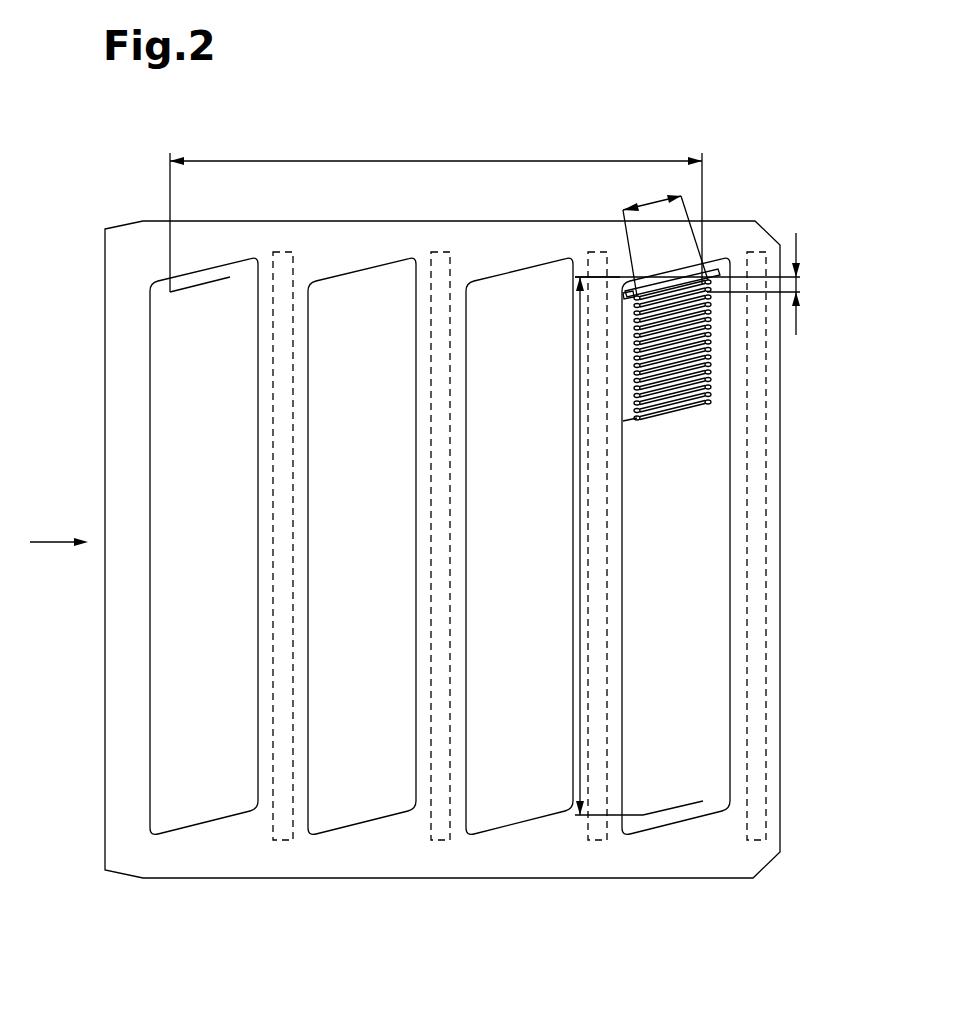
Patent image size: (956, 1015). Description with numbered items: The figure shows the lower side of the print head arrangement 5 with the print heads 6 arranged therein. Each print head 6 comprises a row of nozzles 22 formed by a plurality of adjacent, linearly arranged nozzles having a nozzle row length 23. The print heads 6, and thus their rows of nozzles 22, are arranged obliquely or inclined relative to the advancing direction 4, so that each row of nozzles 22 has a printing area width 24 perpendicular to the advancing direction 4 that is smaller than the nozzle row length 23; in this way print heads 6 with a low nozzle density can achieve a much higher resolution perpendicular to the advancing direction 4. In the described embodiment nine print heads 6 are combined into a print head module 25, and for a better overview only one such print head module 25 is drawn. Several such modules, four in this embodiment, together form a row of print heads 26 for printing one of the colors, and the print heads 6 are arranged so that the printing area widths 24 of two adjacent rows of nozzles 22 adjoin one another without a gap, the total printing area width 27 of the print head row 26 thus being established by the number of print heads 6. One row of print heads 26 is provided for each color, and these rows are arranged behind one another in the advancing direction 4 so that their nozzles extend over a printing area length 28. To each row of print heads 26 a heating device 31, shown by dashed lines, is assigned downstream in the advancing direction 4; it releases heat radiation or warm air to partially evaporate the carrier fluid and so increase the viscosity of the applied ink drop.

The advancing direction 4 is at (46, 538).
The print head arrangement 5 is at (90, 834).
The print head 6 is at (696, 385).
The row of nozzles 22 is at (690, 290).
The nozzle row length 23 is at (655, 196).
The printing area width 24 is at (805, 252).
The print head module 25 is at (606, 260).
The row of print heads 26 is at (238, 838).
The total printing area width 27 is at (578, 497).
The printing area length 28 is at (446, 150).
The heating device 31 is at (293, 852).